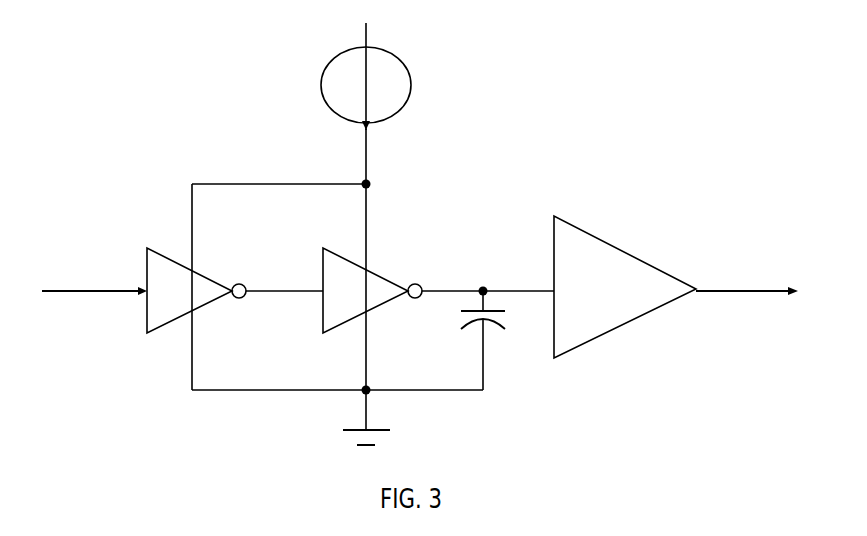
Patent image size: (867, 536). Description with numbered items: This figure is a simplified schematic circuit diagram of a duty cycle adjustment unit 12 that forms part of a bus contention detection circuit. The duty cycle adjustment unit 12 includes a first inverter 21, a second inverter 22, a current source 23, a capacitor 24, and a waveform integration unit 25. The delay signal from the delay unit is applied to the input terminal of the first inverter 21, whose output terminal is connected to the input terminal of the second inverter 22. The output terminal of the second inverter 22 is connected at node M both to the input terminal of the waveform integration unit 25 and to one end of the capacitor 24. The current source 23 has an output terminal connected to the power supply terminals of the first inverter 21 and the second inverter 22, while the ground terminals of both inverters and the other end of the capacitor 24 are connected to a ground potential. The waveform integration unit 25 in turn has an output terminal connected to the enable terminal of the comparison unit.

The duty cycle adjustment unit 12 is at (93, 127).
The first inverter 21 is at (205, 275).
The second inverter 22 is at (380, 272).
The current source 23 is at (407, 70).
The capacitor 24 is at (497, 325).
The waveform integration unit 25 is at (622, 250).